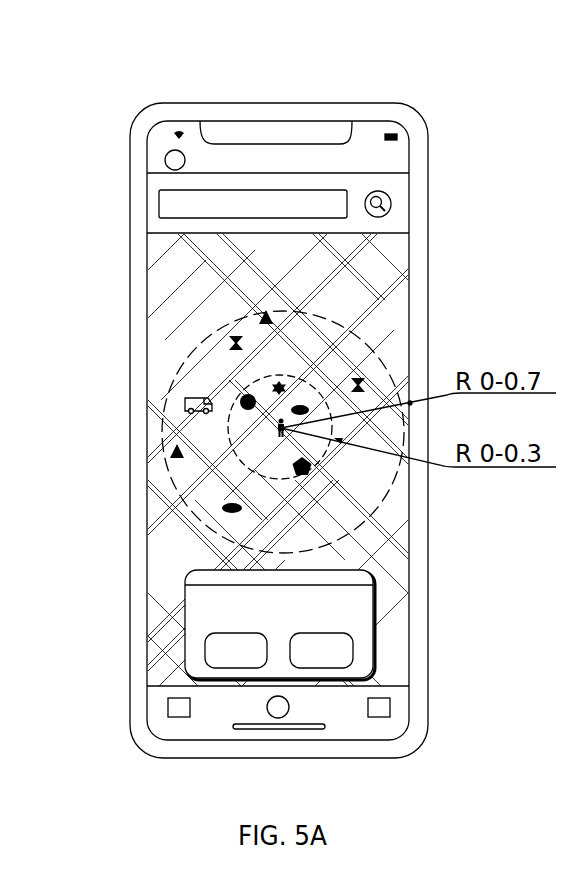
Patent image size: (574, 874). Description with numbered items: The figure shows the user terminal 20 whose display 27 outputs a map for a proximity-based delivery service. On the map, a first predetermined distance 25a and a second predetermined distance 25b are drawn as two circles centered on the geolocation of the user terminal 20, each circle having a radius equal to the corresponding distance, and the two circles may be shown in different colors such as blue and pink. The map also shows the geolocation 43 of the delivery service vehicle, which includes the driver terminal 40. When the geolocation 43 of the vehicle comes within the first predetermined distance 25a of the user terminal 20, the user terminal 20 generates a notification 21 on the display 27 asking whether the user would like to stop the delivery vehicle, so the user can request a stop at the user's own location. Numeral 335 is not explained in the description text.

The user terminal 20 is at (257, 102).
The display 27 is at (410, 258).
The first predetermined distance 25a is at (187, 348).
The second predetermined distance 25b is at (227, 453).
The geolocation of the delivery service vehicle 43 is at (129, 374).
The driver terminal 40 is at (183, 400).
The user location marker 335 is at (279, 428).
The notification 21 is at (185, 597).